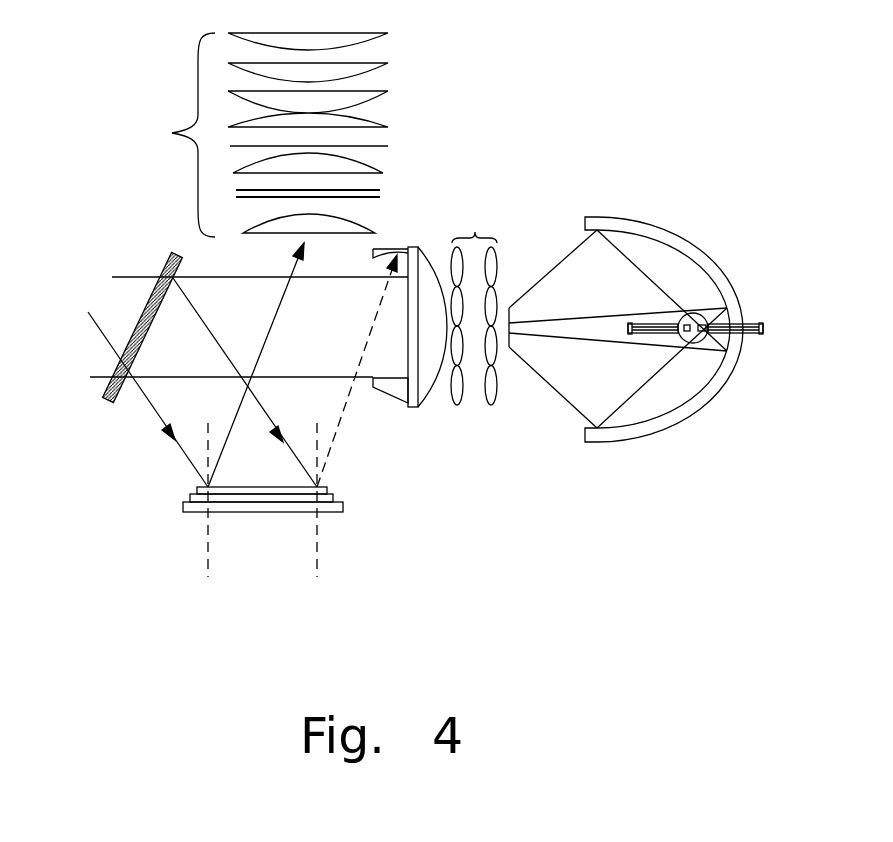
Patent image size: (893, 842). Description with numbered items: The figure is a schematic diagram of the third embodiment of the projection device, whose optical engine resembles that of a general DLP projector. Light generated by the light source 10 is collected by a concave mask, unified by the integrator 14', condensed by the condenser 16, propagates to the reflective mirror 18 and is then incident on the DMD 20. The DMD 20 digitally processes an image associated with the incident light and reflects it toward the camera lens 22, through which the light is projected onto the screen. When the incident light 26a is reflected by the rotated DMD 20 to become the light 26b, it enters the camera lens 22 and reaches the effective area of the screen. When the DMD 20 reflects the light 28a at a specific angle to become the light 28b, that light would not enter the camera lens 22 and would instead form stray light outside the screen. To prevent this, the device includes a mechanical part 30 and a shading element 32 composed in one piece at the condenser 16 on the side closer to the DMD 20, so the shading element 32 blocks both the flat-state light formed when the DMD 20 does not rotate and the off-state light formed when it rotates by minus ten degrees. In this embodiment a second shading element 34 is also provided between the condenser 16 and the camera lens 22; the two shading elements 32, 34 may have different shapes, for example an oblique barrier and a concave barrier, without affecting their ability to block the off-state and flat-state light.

The light source 10 is at (707, 345).
The integrator 14' is at (474, 302).
The condenser 16 is at (427, 397).
The reflective mirror 18 is at (137, 320).
The DMD 20 is at (263, 513).
The camera lens 22 is at (265, 135).
The light 26a is at (153, 412).
The light 26b is at (215, 467).
The light 28a is at (158, 263).
The light 28b is at (348, 400).
The mechanical part 30 is at (415, 247).
The shading element 32 is at (395, 392).
The shading element 34 is at (380, 248).